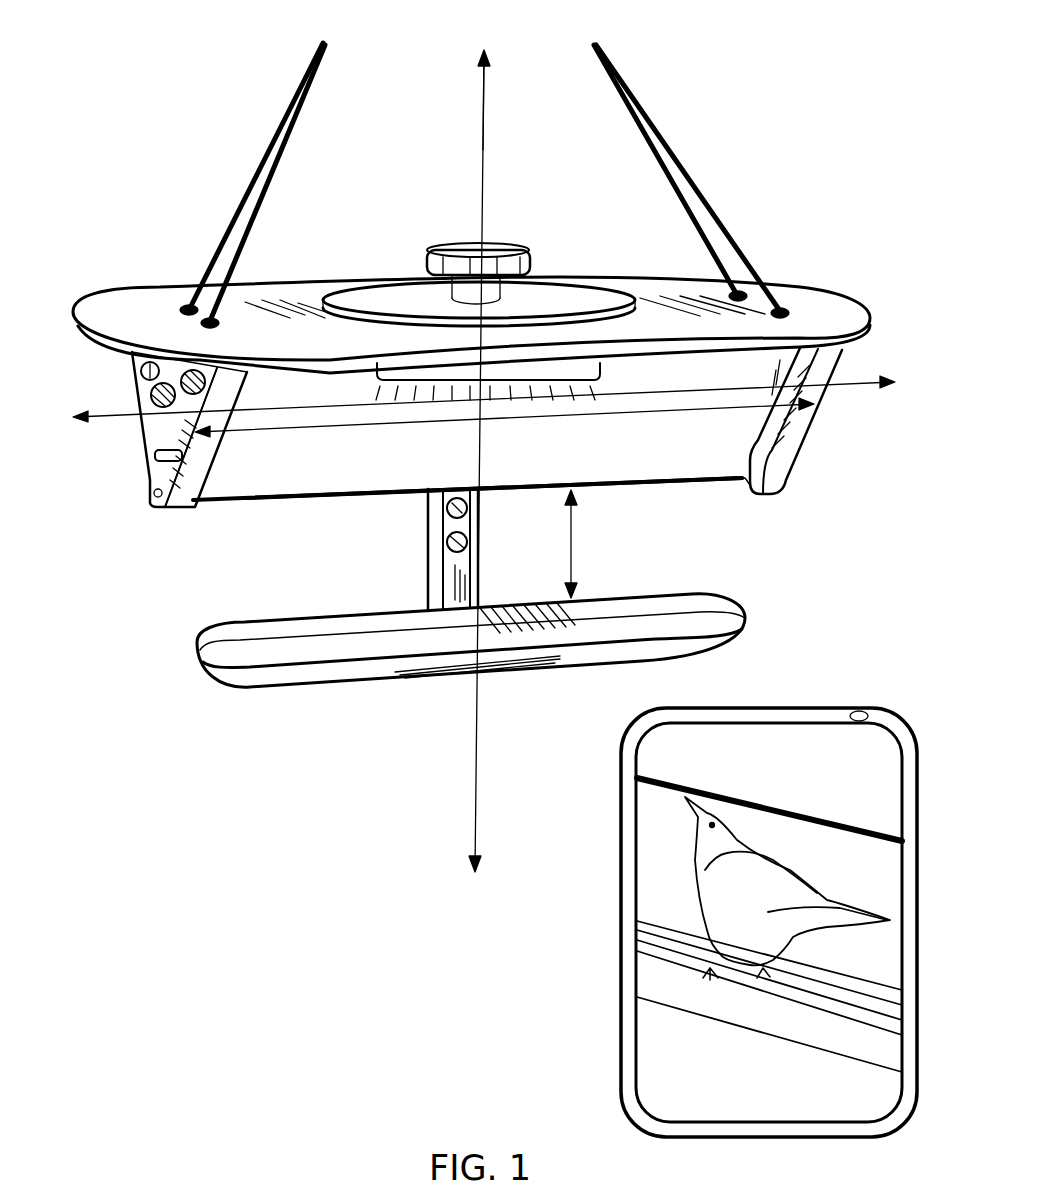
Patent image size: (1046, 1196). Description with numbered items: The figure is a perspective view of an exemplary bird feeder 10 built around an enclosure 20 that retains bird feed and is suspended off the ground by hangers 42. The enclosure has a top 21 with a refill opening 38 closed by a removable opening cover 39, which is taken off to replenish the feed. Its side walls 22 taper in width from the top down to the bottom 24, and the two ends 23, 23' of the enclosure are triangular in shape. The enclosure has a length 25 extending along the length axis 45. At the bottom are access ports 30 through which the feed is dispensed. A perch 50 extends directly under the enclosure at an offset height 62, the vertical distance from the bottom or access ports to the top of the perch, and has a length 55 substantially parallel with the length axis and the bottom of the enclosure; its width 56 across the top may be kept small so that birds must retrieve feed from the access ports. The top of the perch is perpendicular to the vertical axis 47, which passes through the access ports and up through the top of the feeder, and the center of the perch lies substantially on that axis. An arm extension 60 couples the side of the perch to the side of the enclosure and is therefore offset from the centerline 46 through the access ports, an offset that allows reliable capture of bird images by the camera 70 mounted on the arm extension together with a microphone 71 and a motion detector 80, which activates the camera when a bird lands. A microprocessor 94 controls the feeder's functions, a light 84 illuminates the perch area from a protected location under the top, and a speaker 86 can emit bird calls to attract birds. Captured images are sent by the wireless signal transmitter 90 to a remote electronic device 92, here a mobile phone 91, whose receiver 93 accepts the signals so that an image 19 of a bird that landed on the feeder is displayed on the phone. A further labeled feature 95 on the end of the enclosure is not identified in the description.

The bird feeder 10 is at (556, 184).
The image 19 is at (885, 884).
The enclosure 20 is at (826, 300).
The top 21 is at (276, 298).
The side walls 22 is at (733, 464).
The end 23 is at (169, 429).
The end 23' is at (812, 421).
The bottom 24 is at (233, 497).
The length 25 is at (484, 406).
The access ports 30 is at (318, 492).
The refill opening 38 is at (596, 290).
The opening cover 39 is at (367, 298).
The hangers 42 is at (295, 93).
The length axis 45 is at (140, 428).
The centerline 46 is at (483, 153).
The vertical axis 47 is at (485, 103).
The perch 50 is at (320, 690).
The length 55 is at (318, 622).
The width 56 is at (600, 608).
The arm extension 60 is at (437, 530).
The offset height 62 is at (578, 540).
The camera 70 is at (440, 550).
The microphone 71 is at (477, 540).
The motion detector 80 is at (447, 505).
The light 84 is at (603, 362).
The speaker 86 is at (135, 375).
The wireless signal transmitter 90 is at (156, 360).
The mobile phone 91 is at (612, 803).
The remote electronic device 92 is at (615, 855).
The receiver 93 is at (868, 711).
The microprocessor 94 is at (220, 370).
The slot 95 is at (153, 458).